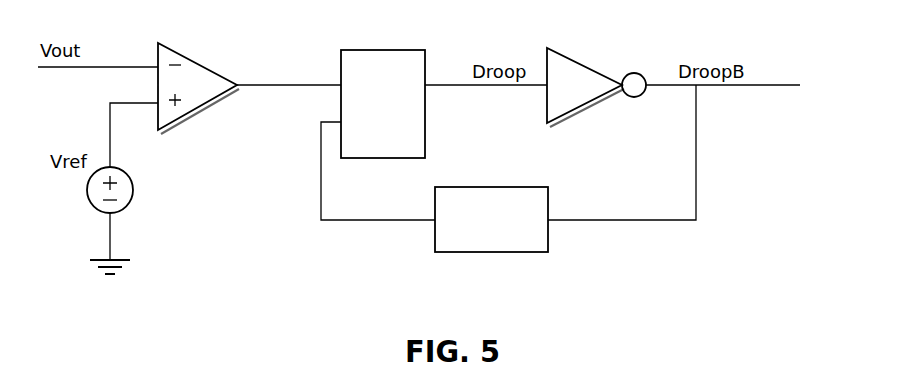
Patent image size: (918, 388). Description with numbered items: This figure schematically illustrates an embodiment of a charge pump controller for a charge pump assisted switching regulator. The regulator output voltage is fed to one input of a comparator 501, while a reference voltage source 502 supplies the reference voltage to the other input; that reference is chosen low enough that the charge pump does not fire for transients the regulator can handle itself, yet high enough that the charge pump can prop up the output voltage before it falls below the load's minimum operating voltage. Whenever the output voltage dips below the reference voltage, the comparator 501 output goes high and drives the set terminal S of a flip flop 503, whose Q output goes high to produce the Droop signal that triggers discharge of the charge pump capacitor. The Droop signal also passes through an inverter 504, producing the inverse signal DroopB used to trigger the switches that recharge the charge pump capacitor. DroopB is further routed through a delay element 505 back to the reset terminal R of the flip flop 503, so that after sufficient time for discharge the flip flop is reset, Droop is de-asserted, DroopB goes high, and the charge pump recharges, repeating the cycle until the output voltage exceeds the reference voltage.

The comparator 501 is at (182, 50).
The reference voltage source 502 is at (133, 207).
The flip flop 503 is at (368, 50).
The inverter 504 is at (585, 58).
The delay element 505 is at (482, 253).